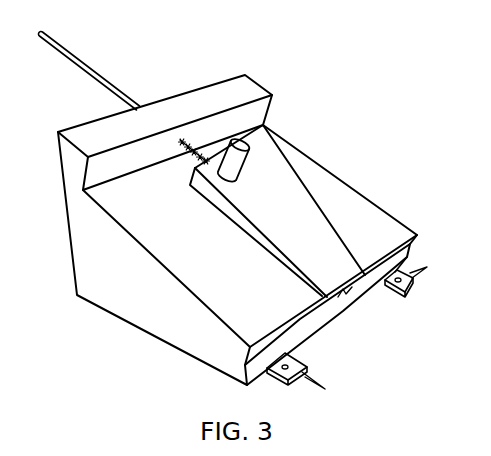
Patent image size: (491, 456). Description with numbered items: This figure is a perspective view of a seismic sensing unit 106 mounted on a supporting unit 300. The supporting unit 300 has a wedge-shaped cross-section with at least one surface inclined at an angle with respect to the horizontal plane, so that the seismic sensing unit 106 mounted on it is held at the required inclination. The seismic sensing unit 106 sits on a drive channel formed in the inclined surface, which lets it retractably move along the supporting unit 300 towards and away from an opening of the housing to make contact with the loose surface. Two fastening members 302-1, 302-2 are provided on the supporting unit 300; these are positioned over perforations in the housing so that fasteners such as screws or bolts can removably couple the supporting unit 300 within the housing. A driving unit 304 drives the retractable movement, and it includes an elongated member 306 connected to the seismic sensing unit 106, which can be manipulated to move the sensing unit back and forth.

The supporting unit 300 is at (158, 240).
The seismic sensing unit 106 is at (280, 236).
The driving unit 304 is at (197, 143).
The elongated member 306 is at (100, 72).
The fastening member 302-1 is at (350, 397).
The fastening member 302-2 is at (442, 263).